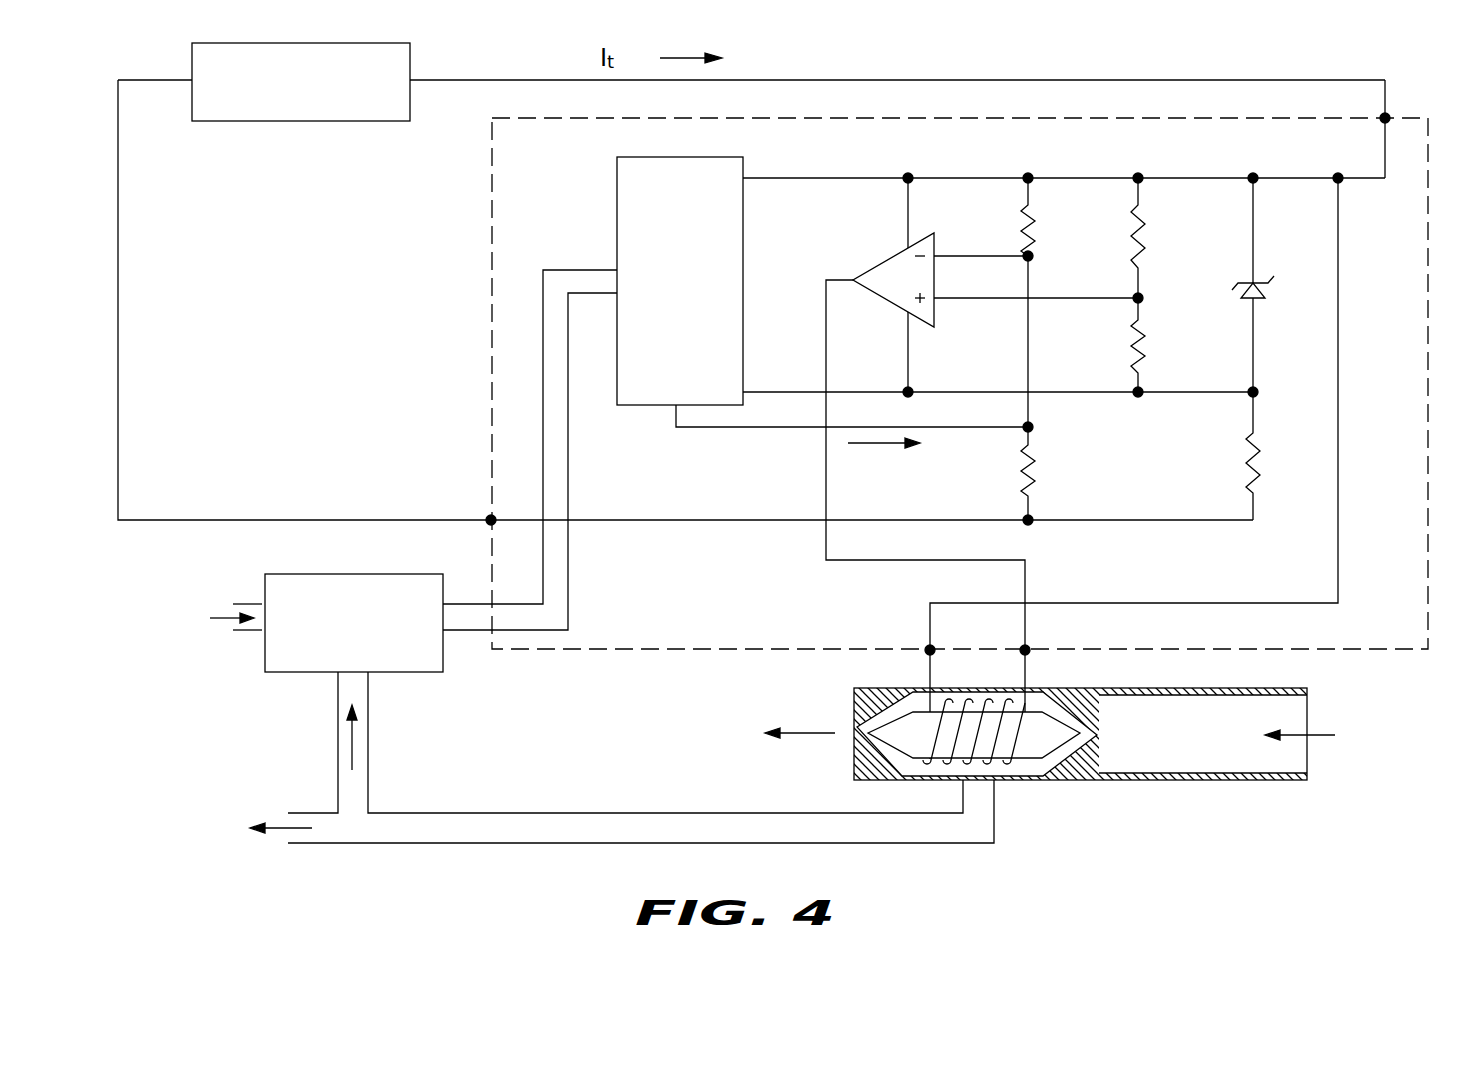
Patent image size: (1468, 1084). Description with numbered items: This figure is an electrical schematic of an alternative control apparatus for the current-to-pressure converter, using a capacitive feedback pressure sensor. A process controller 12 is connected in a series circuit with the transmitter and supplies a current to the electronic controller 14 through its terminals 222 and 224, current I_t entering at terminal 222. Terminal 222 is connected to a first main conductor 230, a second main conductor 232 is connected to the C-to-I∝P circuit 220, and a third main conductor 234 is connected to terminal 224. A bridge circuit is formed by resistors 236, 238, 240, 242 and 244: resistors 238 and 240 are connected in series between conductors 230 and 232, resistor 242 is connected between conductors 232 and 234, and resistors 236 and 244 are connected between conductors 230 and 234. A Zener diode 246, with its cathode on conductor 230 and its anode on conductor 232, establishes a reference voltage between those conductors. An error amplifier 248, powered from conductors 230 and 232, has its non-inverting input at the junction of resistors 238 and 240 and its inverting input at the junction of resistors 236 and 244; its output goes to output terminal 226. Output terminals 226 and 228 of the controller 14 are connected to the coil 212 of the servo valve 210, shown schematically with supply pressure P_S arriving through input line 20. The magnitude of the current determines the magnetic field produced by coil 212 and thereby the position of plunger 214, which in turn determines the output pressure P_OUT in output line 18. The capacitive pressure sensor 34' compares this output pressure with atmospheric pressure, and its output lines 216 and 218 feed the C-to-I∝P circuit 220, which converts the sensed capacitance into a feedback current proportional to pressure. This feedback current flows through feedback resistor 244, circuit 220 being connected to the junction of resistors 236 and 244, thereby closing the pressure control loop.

The process controller 12 is at (310, 122).
The electronic controller 14 is at (492, 227).
The output line 18 is at (512, 843).
The input line 20 is at (1230, 782).
The capacitive pressure sensor 34' is at (265, 656).
The servo valve 210 is at (1085, 770).
The coil 212 is at (1000, 765).
The plunger 214 is at (1040, 765).
The output line 216 is at (470, 600).
The output line 218 is at (476, 635).
The C-to-I∝P circuit 220 is at (617, 180).
The terminal 222 is at (1393, 112).
The terminal 224 is at (489, 518).
The output terminal 226 is at (1032, 648).
The output terminal 228 is at (925, 648).
The first main conductor 230 is at (970, 178).
The second main conductor 232 is at (980, 390).
The third main conductor 234 is at (778, 522).
The resistor 236 is at (1034, 216).
The resistor 238 is at (1147, 242).
The resistor 240 is at (1143, 345).
The resistor 242 is at (1257, 457).
The feedback resistor 244 is at (1035, 466).
The Zener diode 246 is at (1280, 273).
The error amplifier 248 is at (880, 260).